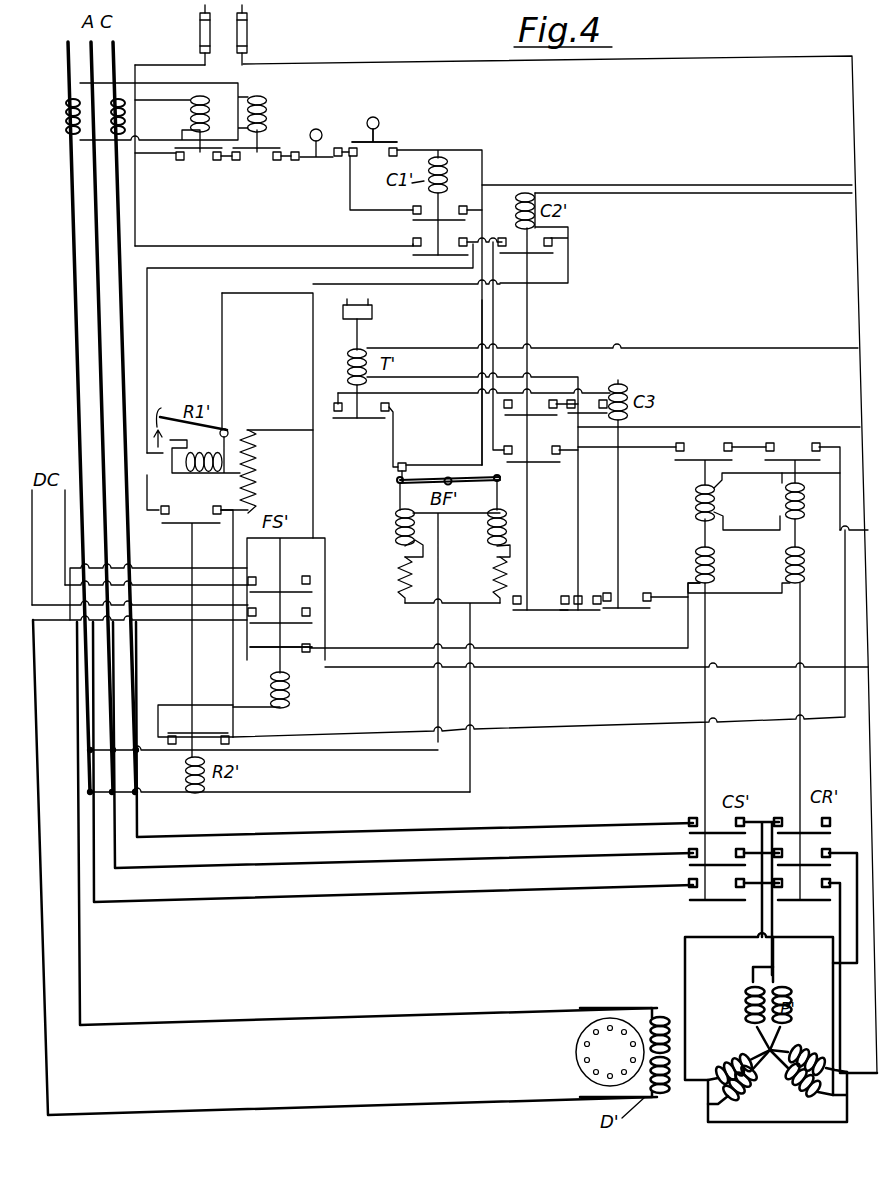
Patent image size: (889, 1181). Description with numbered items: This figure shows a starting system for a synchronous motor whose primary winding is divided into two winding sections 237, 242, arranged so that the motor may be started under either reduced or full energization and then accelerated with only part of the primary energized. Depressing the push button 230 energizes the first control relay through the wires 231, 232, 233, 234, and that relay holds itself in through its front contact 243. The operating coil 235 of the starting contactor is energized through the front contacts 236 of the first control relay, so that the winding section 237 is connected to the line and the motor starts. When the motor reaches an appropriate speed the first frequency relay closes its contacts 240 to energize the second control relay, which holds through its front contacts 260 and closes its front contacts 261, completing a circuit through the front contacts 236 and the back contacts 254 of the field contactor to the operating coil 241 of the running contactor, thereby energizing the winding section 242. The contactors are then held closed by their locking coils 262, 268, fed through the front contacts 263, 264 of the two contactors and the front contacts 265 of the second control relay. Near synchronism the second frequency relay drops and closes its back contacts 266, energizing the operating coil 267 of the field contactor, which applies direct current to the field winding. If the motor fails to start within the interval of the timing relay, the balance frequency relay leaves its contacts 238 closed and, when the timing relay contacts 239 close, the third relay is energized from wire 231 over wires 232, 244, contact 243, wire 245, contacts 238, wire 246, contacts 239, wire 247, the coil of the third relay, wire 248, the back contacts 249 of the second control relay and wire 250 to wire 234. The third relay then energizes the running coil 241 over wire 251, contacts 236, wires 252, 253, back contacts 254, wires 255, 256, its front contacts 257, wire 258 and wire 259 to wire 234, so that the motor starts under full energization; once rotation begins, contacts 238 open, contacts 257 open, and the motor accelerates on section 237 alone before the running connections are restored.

The push button 230 is at (385, 138).
The wire 231 is at (166, 70).
The wire 232 is at (145, 158).
The wire 233 is at (688, 183).
The wire 234 is at (678, 62).
The operating coil 235 is at (724, 709).
The front contacts 236 is at (416, 258).
The primary winding section 237 is at (784, 1000).
The contacts 238 is at (404, 462).
The contacts 239 is at (348, 420).
The contacts 240 is at (170, 407).
The operating coil 241 is at (813, 709).
The primary winding section 242 is at (748, 988).
The front contact 243 is at (414, 224).
The wire 244 is at (346, 199).
The wire 245 is at (481, 318).
The wire 246 is at (394, 437).
The wire 247 is at (437, 394).
The wire 248 is at (587, 403).
The back contacts 249 is at (541, 405).
The wire 250 is at (758, 427).
The wire 251 is at (207, 247).
The wire 252 is at (345, 270).
The wire 253 is at (312, 320).
The back contacts 254 is at (312, 654).
The wire 255 is at (515, 644).
The wire 256 is at (580, 628).
The front contacts 257 is at (641, 612).
The wire 258 is at (738, 594).
The wire 259 is at (835, 528).
The front contacts 260 is at (570, 262).
The front contacts 261 is at (524, 616).
The locking coil 262 is at (768, 501).
The front contacts 263 is at (703, 456).
The front contacts 264 is at (786, 478).
The front contacts 265 is at (540, 466).
The back contacts 266 is at (197, 724).
The operating coil 267 is at (294, 690).
The locking coil 268 is at (810, 496).